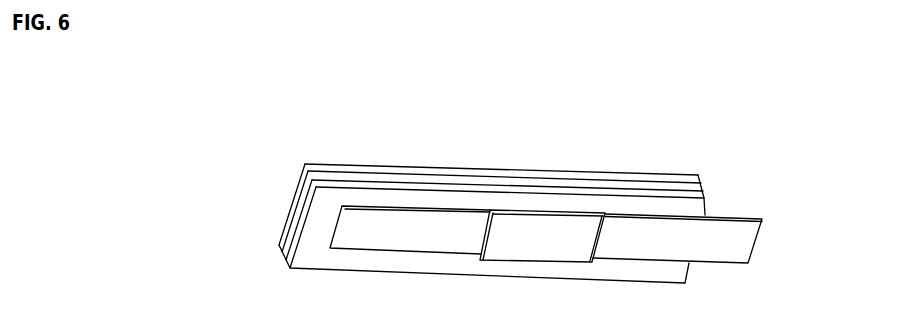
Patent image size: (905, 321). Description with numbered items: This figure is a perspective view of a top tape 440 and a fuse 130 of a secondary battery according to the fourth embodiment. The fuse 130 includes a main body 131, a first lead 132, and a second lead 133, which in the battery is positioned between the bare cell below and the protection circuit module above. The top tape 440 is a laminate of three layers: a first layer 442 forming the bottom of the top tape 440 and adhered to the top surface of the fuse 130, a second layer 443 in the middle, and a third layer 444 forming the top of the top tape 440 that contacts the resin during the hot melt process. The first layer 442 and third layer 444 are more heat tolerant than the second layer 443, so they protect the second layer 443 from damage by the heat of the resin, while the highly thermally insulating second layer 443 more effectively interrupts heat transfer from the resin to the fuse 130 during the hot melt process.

The fuse 130 is at (546, 166).
The main body 131 is at (541, 238).
The first lead 132 is at (452, 232).
The second lead 133 is at (636, 247).
The top tape 440 is at (487, 196).
The first layer 442 is at (318, 182).
The second layer 443 is at (305, 163).
The third layer 444 is at (344, 166).